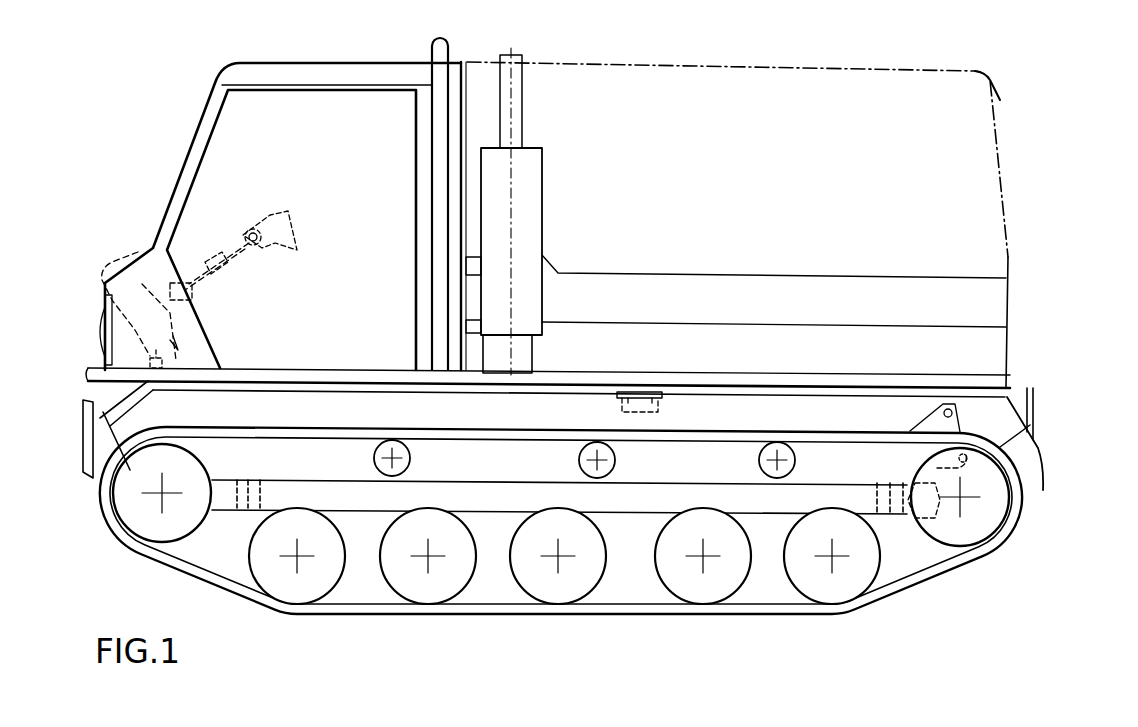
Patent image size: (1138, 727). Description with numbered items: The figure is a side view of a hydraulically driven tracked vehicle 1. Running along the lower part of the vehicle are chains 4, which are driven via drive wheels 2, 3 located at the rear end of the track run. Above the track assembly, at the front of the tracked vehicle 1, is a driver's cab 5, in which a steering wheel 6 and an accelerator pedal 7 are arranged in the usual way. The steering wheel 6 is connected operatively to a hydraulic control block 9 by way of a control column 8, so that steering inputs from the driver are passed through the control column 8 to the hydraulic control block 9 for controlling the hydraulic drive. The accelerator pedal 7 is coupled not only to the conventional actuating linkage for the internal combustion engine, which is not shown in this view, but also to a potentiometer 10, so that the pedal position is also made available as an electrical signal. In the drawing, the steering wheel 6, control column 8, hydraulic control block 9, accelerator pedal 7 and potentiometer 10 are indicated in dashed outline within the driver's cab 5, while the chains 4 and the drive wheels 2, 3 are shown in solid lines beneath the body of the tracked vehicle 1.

The tracked vehicle 1 is at (1015, 95).
The drive wheel 2 is at (986, 530).
The drive wheel 3 is at (987, 503).
The chains 4 is at (743, 614).
The driver's cab 5 is at (212, 128).
The steering wheel 6 is at (285, 216).
The accelerator pedal 7 is at (142, 284).
The control column 8 is at (215, 266).
The hydraulic control block 9 is at (138, 252).
The potentiometer 10 is at (148, 360).